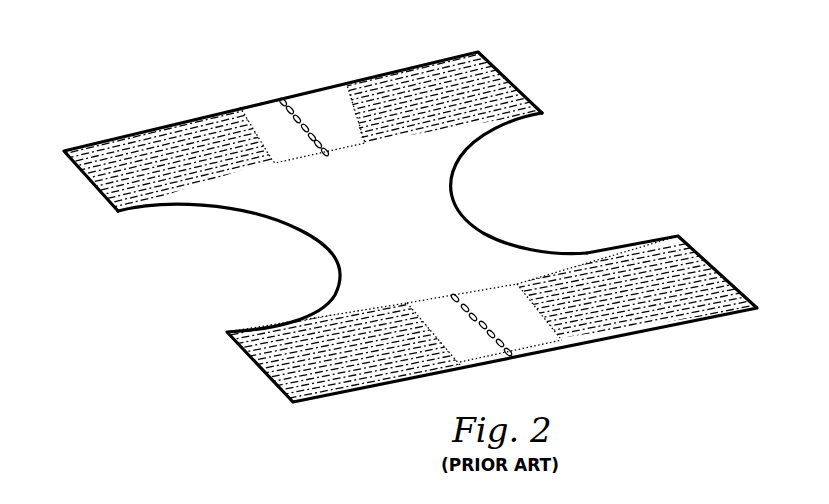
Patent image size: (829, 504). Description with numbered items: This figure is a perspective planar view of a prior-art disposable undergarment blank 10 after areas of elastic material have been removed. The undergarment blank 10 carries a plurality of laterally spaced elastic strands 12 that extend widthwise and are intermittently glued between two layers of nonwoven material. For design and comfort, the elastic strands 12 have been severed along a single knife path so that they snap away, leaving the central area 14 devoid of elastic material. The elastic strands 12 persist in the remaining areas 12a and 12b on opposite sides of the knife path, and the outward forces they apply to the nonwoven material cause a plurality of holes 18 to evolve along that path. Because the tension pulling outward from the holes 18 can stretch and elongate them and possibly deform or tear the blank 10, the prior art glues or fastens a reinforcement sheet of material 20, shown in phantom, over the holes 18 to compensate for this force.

The disposable undergarment blank 10 is at (117, 100).
The elastic strands 12 is at (85, 173).
The remaining area of strands 12a is at (202, 147).
The remaining area of strands 12b is at (407, 97).
The central area 14 is at (270, 112).
The holes 18 is at (318, 140).
The reinforcement sheet of material 20 is at (345, 122).